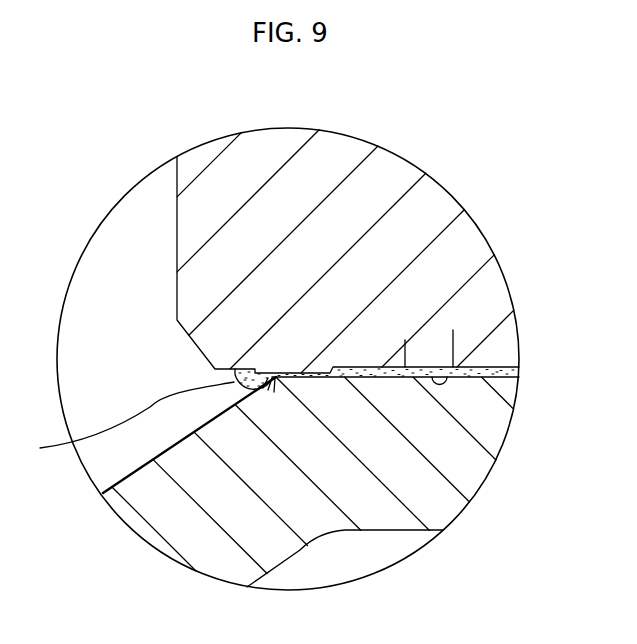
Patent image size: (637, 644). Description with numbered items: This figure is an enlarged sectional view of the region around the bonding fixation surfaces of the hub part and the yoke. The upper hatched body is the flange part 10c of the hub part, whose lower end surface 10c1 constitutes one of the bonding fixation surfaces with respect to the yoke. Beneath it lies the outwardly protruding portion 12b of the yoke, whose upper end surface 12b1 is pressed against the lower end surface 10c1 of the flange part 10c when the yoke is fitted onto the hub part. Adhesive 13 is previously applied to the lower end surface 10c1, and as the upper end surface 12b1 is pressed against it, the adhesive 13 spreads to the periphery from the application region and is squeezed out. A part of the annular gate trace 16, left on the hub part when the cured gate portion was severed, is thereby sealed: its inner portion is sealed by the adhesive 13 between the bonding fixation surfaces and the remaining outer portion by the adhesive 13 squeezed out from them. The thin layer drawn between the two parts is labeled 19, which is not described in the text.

The flange part 10c is at (362, 203).
The upper end surface of the outwardly protruding portion 12b1 is at (405, 340).
The lower end surface of the flange part 10c1 is at (453, 330).
The adhesive layer 19 is at (320, 377).
The adhesive 13 is at (120, 423).
The annular gate trace 16 is at (268, 392).
The outwardly protruding portion 12b is at (400, 463).